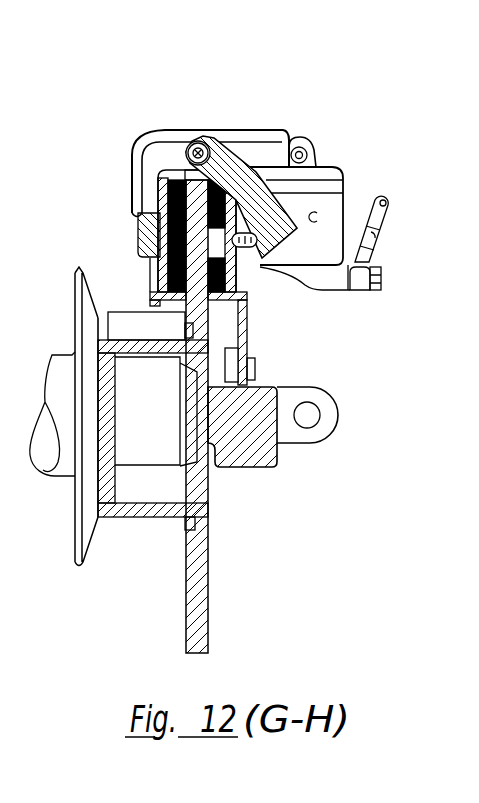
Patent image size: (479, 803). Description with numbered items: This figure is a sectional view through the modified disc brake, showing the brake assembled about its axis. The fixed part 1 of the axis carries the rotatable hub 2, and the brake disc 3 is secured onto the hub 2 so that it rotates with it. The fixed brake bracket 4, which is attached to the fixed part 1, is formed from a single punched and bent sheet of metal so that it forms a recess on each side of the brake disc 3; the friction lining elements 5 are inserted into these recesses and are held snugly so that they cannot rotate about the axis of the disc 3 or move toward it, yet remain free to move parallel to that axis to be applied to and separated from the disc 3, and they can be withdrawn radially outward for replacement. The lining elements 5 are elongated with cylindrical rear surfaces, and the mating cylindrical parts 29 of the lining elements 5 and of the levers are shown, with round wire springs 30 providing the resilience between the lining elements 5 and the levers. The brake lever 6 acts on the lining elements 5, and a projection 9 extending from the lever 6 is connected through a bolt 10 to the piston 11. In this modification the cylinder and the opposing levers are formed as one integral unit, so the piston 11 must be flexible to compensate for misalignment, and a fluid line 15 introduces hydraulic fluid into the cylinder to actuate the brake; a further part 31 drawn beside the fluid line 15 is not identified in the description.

The fixed part of the axis 1 is at (233, 453).
The rotatable hub 2 is at (123, 455).
The brake disc 3 is at (198, 612).
The fixed brake bracket 4 is at (247, 348).
The friction lining elements 5 is at (155, 272).
The brake lever 6 is at (156, 163).
The projection 9 is at (264, 155).
The bolt 10 is at (292, 150).
The piston 11 is at (310, 163).
The fluid line 15 is at (373, 238).
The mating cylindrical parts 29 is at (132, 200).
The round wire springs 30 is at (255, 255).
The lever 31 is at (387, 202).